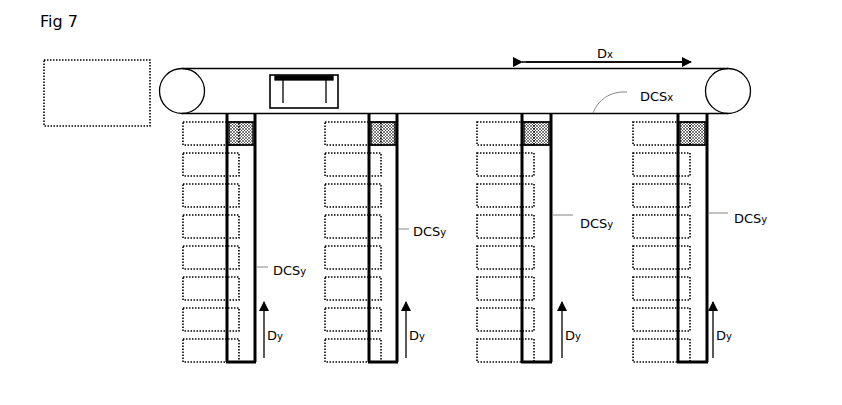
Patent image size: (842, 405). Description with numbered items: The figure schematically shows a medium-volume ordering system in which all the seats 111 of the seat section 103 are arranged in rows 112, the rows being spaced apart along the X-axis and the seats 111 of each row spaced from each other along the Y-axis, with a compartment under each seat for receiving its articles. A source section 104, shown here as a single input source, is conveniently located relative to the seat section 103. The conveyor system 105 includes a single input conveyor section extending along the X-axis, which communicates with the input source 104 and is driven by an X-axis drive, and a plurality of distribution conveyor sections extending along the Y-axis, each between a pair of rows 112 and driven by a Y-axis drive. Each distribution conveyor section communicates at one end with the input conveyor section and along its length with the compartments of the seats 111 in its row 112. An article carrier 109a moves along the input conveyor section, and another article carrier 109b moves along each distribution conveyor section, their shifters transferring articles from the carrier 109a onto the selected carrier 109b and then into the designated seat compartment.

The seat section 103 is at (183, 205).
The source section 104 is at (82, 127).
The conveyor system 105 is at (553, 261).
The article carrier 109a is at (282, 75).
The article carrier 109b is at (256, 124).
The seats 111 is at (325, 214).
The rows 112 is at (351, 121).